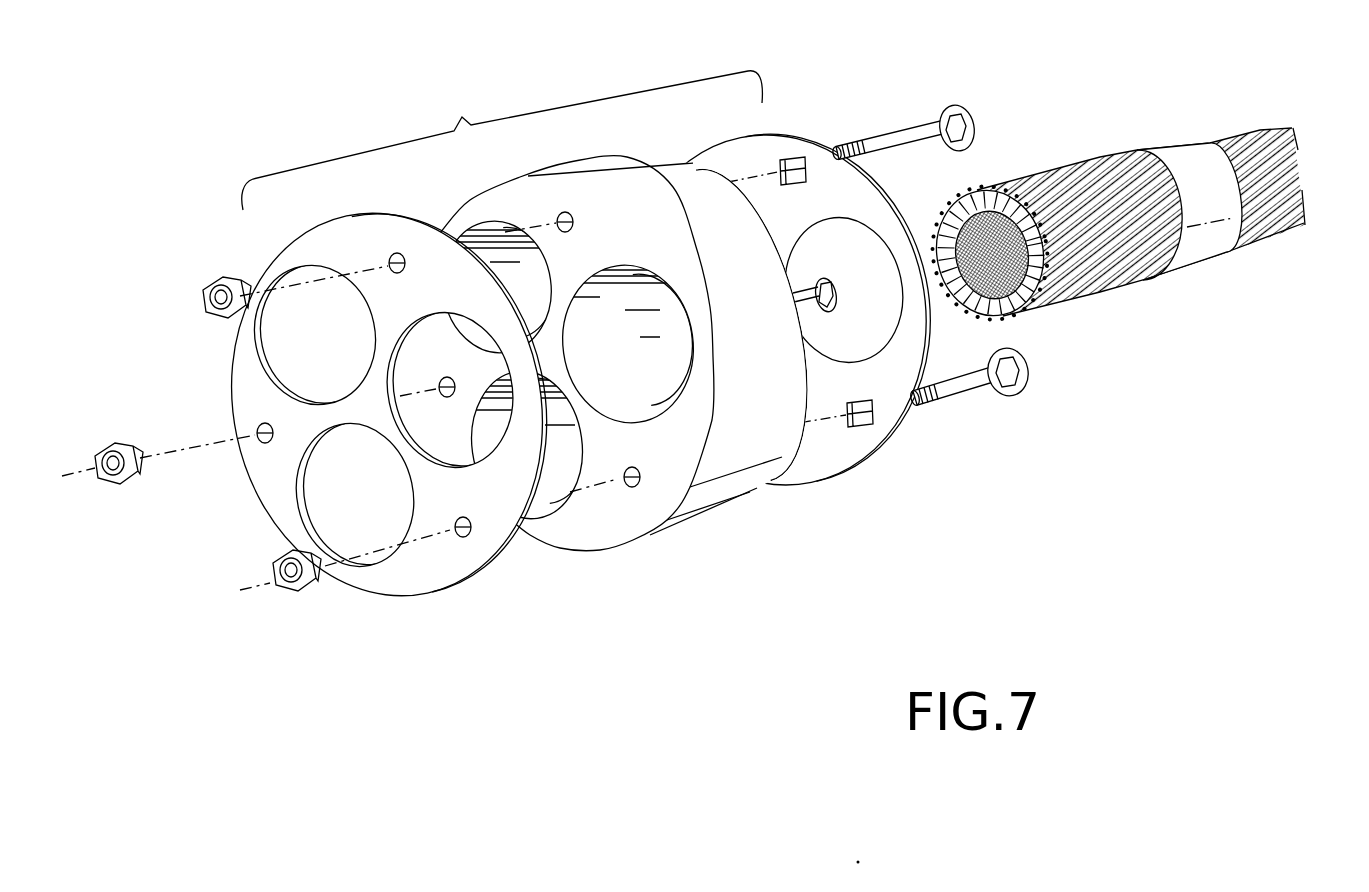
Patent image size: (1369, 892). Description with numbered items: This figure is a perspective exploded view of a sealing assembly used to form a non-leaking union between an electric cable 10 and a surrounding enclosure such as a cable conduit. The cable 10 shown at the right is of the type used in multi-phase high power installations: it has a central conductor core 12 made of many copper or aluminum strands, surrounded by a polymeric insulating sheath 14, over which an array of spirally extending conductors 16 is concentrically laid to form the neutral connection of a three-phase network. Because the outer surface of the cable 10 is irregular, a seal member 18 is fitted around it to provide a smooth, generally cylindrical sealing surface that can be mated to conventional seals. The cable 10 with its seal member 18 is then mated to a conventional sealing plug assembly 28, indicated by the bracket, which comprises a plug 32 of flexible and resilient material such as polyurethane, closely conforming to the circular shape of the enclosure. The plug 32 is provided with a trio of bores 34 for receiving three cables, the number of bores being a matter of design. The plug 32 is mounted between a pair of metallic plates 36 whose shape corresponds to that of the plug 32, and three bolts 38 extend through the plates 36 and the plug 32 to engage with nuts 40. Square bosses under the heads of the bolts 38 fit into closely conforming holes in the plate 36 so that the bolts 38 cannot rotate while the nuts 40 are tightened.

The electric cable 10 is at (1135, 227).
The central conductor core 12 is at (992, 275).
The polymeric insulating sheath 14 is at (979, 196).
The spirally extending conductors 16 is at (1303, 147).
The seal member 18 is at (1153, 135).
The sealing plug assembly 28 is at (502, 138).
The plug 32 is at (697, 517).
The bores 34 is at (597, 309).
The metallic plates 36 is at (431, 577).
The bolts 38 is at (893, 140).
The nuts 40 is at (206, 286).